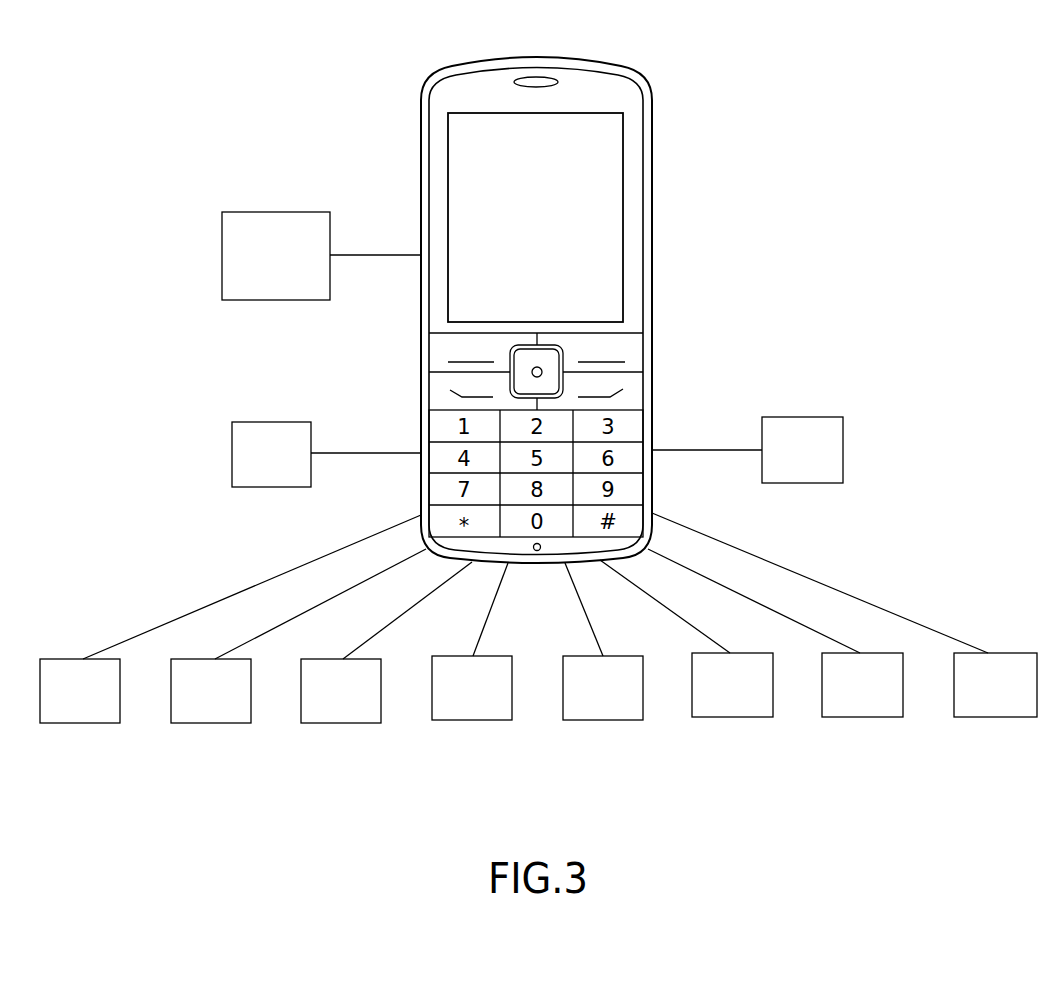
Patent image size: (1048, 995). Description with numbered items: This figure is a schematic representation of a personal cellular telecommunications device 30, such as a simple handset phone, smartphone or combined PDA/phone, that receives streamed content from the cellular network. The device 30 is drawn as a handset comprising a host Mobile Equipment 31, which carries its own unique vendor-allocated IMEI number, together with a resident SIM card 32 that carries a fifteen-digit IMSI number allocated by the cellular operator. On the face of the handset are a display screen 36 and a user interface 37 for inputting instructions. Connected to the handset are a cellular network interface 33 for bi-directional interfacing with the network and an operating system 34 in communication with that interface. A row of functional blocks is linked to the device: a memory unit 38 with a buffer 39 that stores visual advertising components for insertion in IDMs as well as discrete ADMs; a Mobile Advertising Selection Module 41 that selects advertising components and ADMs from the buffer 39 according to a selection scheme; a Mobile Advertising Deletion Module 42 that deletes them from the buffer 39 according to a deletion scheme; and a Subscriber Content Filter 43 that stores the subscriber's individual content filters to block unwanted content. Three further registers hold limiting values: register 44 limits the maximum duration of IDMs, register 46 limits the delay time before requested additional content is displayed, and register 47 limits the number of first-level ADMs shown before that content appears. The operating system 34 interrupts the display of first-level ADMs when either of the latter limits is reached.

The personal cellular telecommunications device 30 is at (740, 91).
The host Mobile Equipment 31 is at (483, 65).
The Subscriber Identity Module card 32 is at (272, 212).
The cellular network interface 33 is at (804, 417).
The operating system 34 is at (270, 422).
The display screen 36 is at (495, 160).
The user interface 37 is at (614, 376).
The memory unit 38 is at (85, 723).
The buffer 39 is at (215, 723).
The Mobile Advertising Selection Module 41 is at (345, 723).
The Mobile Advertising Deletion Module 42 is at (475, 720).
The Subscriber Content Filter 43 is at (605, 720).
The register 44 is at (735, 717).
The register 46 is at (865, 717).
The register 47 is at (997, 717).